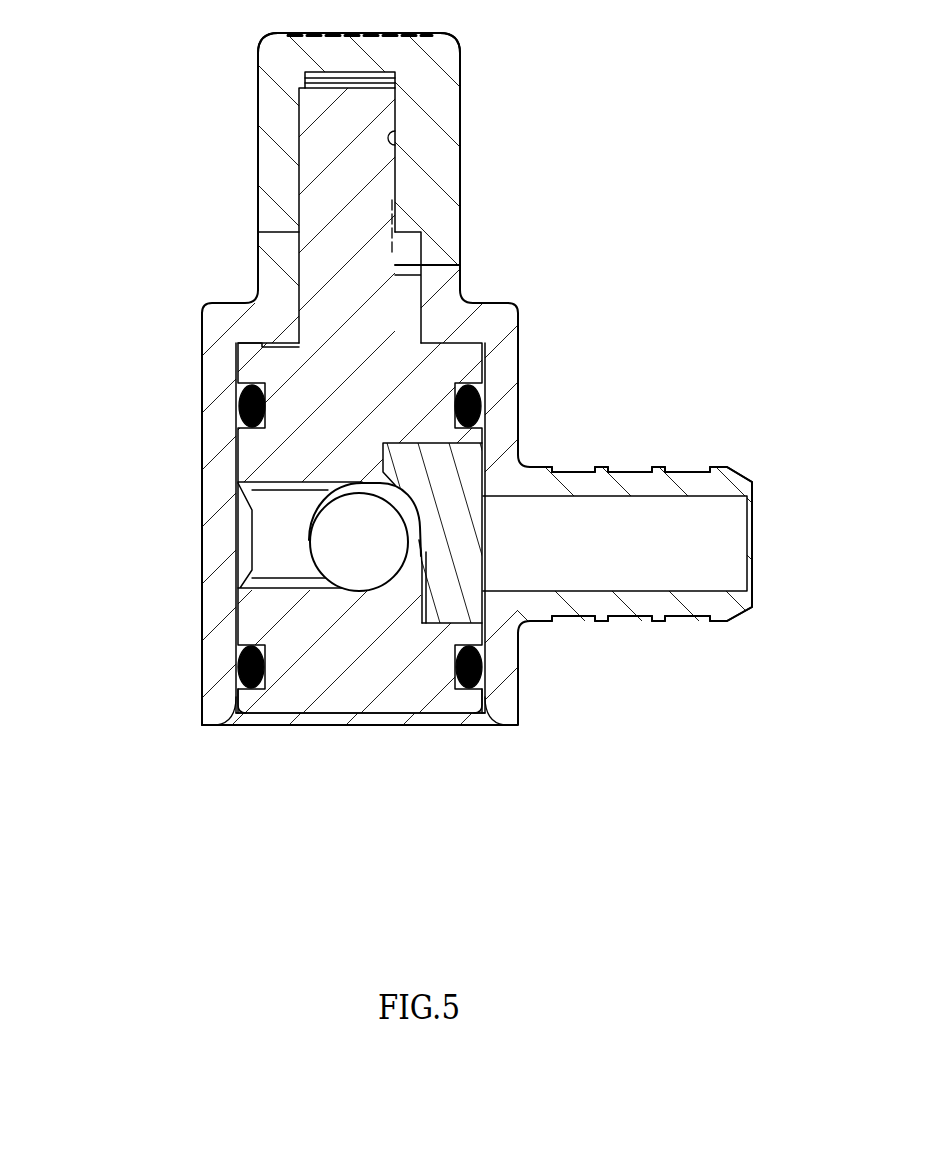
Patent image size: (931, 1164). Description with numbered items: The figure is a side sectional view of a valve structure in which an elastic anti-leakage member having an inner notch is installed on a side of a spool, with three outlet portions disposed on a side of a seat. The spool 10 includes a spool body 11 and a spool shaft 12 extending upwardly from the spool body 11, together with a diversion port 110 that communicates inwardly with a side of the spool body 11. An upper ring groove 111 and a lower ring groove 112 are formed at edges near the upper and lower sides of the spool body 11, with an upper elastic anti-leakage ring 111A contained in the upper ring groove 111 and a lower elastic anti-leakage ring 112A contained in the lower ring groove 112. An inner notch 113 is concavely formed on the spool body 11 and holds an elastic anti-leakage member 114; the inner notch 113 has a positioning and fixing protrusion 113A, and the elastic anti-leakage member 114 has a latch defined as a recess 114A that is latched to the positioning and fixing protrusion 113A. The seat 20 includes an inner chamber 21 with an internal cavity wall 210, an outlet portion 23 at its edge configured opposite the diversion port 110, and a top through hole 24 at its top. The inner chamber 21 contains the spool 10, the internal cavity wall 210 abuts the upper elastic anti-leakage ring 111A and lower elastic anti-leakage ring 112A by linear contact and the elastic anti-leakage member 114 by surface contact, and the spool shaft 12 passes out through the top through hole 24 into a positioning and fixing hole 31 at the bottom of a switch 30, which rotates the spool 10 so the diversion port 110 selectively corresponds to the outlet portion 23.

The spool 10 is at (260, 713).
The spool body 11 is at (466, 298).
The spool shaft 12 is at (312, 162).
The seat 20 is at (537, 312).
The inner chamber 21 is at (200, 633).
The outlet portion 23 is at (733, 542).
The top through hole 24 is at (299, 277).
The switch 30 is at (492, 155).
The positioning and fixing hole 31 is at (263, 40).
The diversion port 110 is at (330, 525).
The upper ring groove 111 is at (233, 343).
The upper elastic anti-leakage ring 111A is at (235, 400).
The lower ring groove 112 is at (457, 690).
The lower elastic anti-leakage ring 112A is at (485, 688).
The inner notch 113 is at (425, 572).
The positioning and fixing protrusion 113A is at (418, 537).
The elastic anti-leakage member 114 is at (463, 462).
The recess 114A is at (417, 502).
The internal cavity wall 210 is at (357, 720).